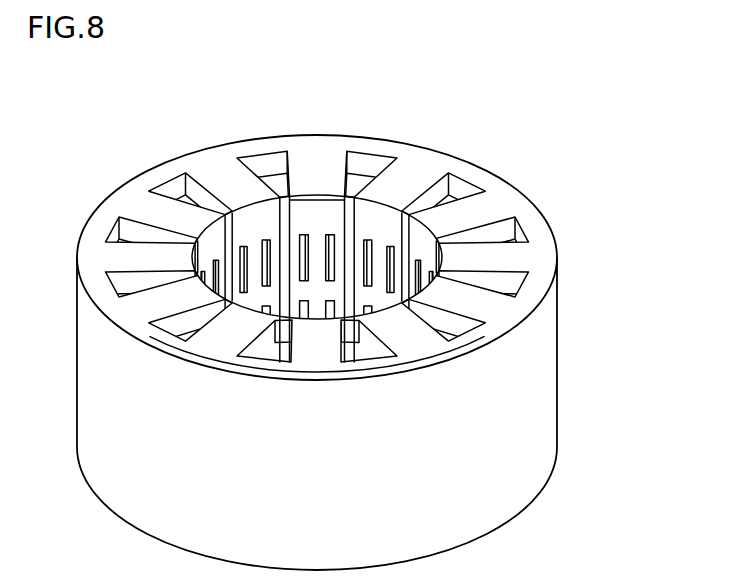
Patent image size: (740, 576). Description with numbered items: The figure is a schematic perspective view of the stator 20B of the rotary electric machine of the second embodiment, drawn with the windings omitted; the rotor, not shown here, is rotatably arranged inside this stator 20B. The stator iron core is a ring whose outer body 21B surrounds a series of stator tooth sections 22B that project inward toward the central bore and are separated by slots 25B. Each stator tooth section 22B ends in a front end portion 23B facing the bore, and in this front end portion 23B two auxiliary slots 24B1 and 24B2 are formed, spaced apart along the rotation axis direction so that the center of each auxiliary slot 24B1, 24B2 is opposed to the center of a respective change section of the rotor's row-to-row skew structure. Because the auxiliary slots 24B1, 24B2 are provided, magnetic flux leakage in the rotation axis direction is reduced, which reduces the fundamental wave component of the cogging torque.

The stator 20B is at (566, 143).
The yoke 21B is at (517, 435).
The stator tooth section 22B is at (395, 182).
The front end portion 23B is at (368, 227).
The auxiliary slot 24B1 is at (372, 262).
The auxiliary slot 24B2 is at (368, 309).
The slot 25B is at (285, 222).